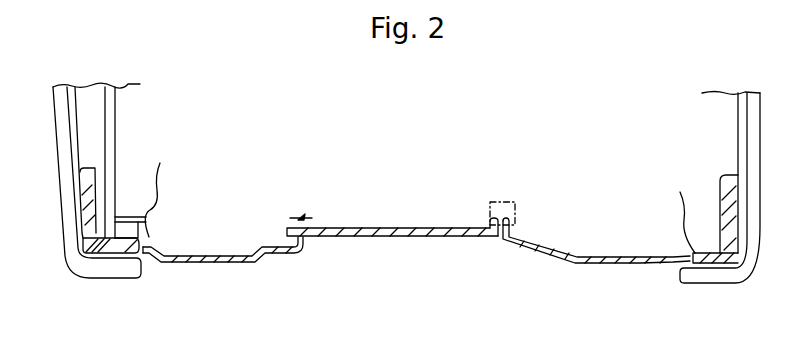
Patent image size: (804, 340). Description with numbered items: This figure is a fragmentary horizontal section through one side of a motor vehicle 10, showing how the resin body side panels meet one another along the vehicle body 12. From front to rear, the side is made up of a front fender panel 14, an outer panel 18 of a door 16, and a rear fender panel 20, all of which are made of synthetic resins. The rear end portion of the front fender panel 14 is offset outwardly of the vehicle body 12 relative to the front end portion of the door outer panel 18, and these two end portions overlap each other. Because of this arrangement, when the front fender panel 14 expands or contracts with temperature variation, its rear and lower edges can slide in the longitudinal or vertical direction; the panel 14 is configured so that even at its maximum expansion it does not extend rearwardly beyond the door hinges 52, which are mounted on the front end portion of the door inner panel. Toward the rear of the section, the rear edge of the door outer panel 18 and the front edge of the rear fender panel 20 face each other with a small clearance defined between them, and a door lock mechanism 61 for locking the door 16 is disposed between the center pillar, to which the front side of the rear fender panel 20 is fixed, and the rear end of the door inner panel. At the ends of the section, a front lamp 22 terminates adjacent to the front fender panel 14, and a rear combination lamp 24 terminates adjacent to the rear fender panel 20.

The motor vehicle 10 is at (655, 102).
The vehicle body 12 is at (515, 262).
The front fender panel 14 is at (247, 264).
The door 16 is at (363, 238).
The door outer panel 18 is at (427, 241).
The rear fender panel 20 is at (604, 265).
The front lamp 22 is at (85, 279).
The rear combination lamp 24 is at (728, 265).
The door hinge 52 is at (300, 218).
The door lock mechanism 61 is at (514, 202).